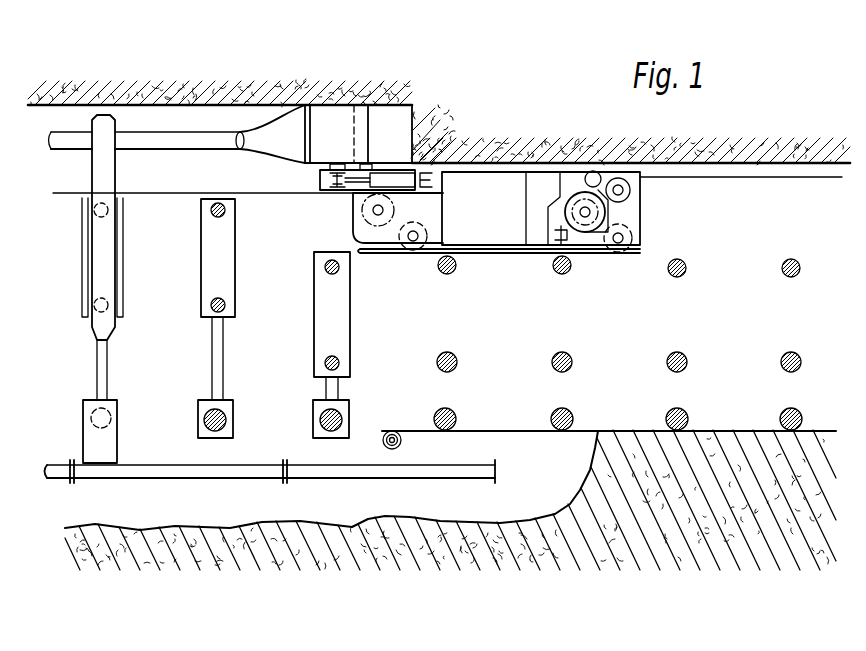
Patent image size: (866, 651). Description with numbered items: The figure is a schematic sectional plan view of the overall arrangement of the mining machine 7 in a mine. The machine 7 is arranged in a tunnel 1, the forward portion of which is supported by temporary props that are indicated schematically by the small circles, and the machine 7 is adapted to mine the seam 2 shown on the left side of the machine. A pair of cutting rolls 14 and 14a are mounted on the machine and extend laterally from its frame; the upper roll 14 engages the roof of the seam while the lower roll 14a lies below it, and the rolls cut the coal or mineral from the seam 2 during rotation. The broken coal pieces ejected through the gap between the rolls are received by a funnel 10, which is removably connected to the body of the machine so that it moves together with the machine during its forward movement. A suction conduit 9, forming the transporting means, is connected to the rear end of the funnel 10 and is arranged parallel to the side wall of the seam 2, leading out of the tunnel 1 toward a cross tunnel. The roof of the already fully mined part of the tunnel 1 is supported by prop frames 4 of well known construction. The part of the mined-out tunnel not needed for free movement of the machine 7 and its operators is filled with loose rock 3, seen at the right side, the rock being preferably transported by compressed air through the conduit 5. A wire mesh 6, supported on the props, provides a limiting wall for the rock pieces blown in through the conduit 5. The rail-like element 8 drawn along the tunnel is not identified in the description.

The tunnel 1 is at (732, 328).
The seam 2 is at (567, 150).
The loose rock 3 is at (595, 478).
The prop frames 4 is at (218, 384).
The conduit 5 is at (150, 470).
The wire mesh 6 is at (396, 430).
The mining machine 7 is at (484, 240).
The guide rail 8 is at (61, 194).
The suction conduit 9 is at (148, 137).
The funnel 10 is at (277, 130).
The upper cutting roll 14 is at (338, 113).
The lower cutting roll 14a is at (398, 115).